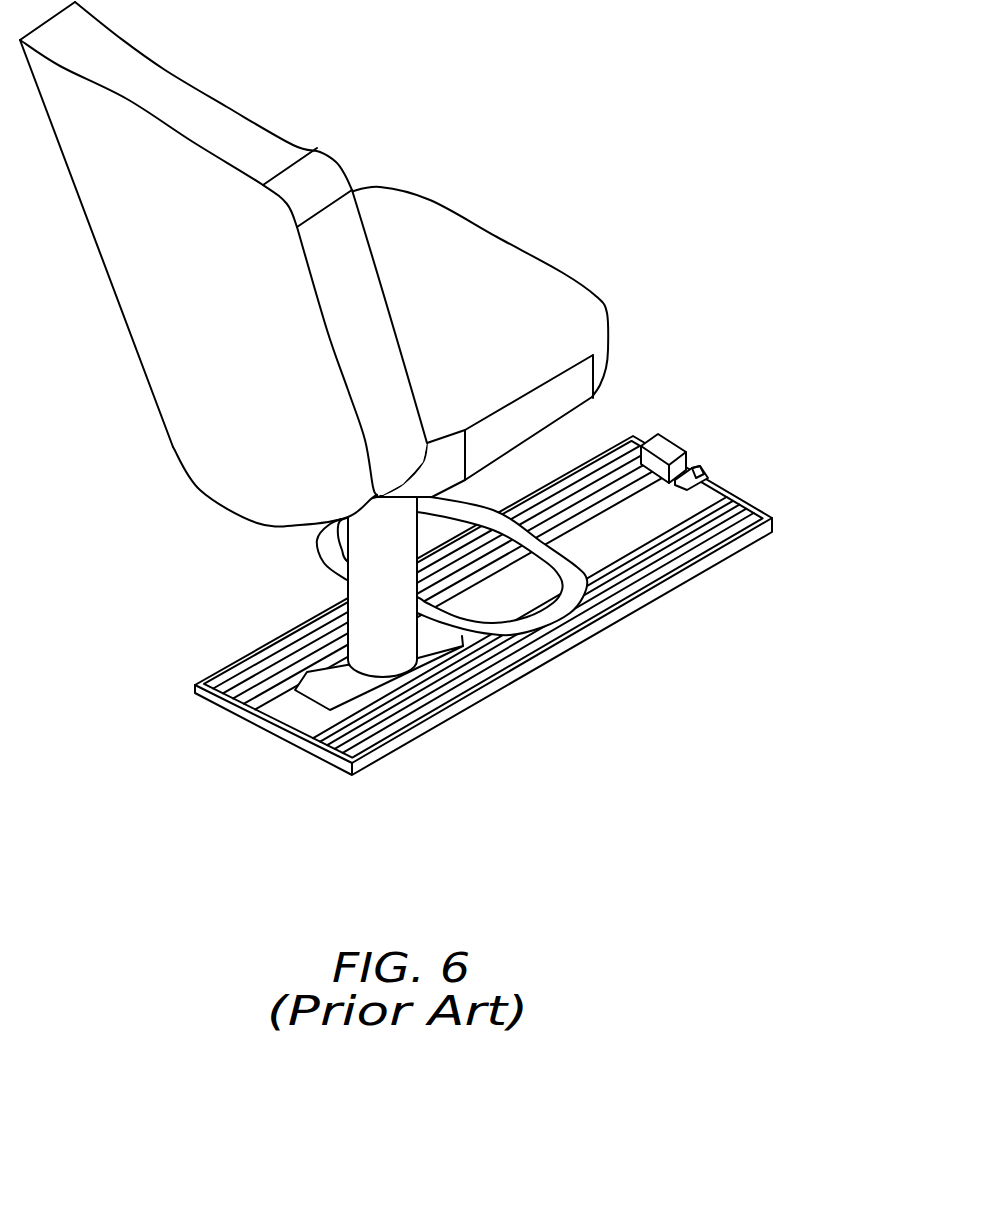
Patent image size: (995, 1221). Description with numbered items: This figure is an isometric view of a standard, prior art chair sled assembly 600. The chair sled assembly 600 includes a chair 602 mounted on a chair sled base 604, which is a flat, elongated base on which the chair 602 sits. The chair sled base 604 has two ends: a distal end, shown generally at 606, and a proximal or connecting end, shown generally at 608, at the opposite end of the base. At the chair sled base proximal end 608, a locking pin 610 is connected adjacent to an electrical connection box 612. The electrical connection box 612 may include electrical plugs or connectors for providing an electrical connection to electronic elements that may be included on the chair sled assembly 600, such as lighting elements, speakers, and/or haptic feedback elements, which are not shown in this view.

The chair sled assembly 600 is at (449, 388).
The chair 602 is at (437, 230).
The chair sled base 604 is at (489, 605).
The distal end 606 is at (192, 648).
The proximal end 608 is at (790, 497).
The locking pin 610 is at (703, 470).
The electrical connection box 612 is at (663, 443).